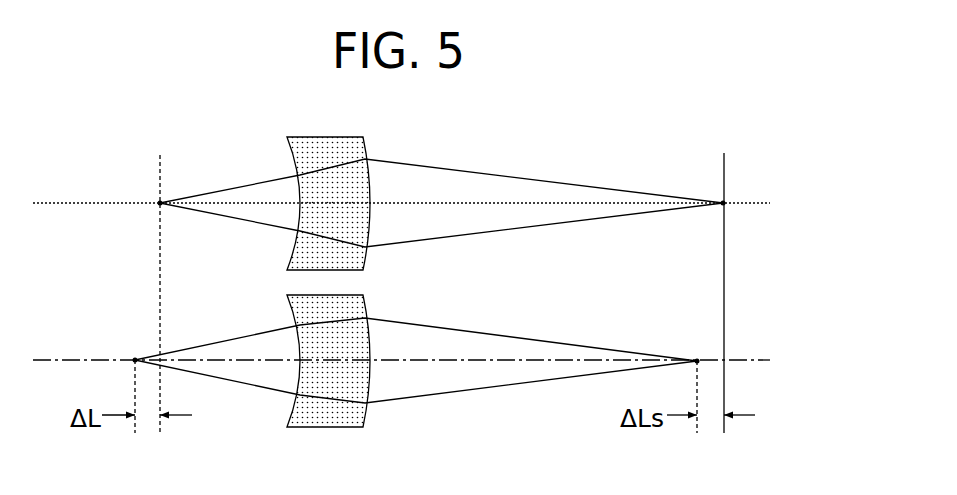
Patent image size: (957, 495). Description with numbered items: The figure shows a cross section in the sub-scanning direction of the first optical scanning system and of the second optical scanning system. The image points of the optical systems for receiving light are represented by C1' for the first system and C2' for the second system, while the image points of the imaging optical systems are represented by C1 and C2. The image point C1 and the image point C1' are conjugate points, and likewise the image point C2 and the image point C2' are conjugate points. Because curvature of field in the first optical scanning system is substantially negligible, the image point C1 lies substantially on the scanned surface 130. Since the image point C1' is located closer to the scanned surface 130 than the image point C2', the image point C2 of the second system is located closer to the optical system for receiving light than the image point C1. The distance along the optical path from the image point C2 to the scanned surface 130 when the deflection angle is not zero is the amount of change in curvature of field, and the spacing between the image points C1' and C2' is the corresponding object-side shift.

The scanned surface 130 is at (724, 255).
The image point of the imaging optical system of the first optical scanning system C1 is at (759, 166).
The image point of the imaging optical system of the second optical scanning system C2 is at (744, 324).
The image point of the optical system for receiving light of the first optical scann C1' is at (108, 169).
The image point of the optical system for receiving light of the second optical scan C2' is at (84, 326).